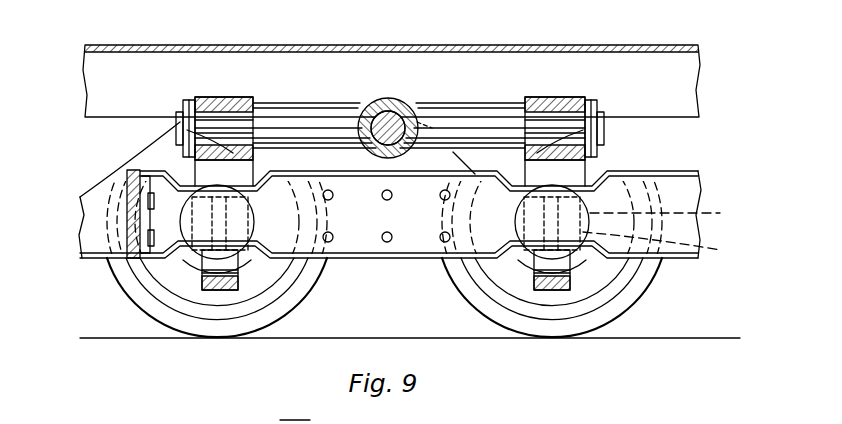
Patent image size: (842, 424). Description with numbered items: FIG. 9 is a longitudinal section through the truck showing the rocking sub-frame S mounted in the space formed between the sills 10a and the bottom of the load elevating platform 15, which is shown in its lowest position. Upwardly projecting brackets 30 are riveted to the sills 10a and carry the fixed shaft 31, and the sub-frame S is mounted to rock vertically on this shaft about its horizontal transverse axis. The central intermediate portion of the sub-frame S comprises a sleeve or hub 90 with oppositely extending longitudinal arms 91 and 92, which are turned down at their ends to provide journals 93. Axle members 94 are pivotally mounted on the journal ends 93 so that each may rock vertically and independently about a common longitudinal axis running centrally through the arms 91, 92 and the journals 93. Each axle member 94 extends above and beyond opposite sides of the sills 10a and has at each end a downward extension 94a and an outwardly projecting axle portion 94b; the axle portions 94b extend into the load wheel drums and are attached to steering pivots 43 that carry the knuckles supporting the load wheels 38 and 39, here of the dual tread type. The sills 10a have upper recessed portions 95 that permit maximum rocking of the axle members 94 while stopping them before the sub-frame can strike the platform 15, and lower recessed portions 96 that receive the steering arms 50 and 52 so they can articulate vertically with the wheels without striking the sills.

The load elevating platform 15 is at (283, 45).
The sills 10a is at (700, 176).
The steering pivots 43 is at (170, 262).
The axle members 94 is at (195, 102).
The downward extension 94a is at (185, 168).
The outwardly projecting axle portion 94b is at (252, 262).
The journals 93 is at (222, 125).
The longitudinal arm 91 is at (302, 118).
The longitudinal arm 92 is at (505, 120).
The sleeve or hub 90 is at (384, 100).
The fixed shaft 31 is at (406, 140).
The rocking sub-frame S is at (432, 104).
The brackets 30 is at (417, 167).
The upper recessed portions 95 is at (165, 170).
The load wheel 38 is at (221, 328).
The load wheel 39 is at (588, 323).
The steering arm 50 is at (214, 273).
The steering arm 52 is at (572, 290).
The lower notched or recessed portions 96 is at (200, 258).